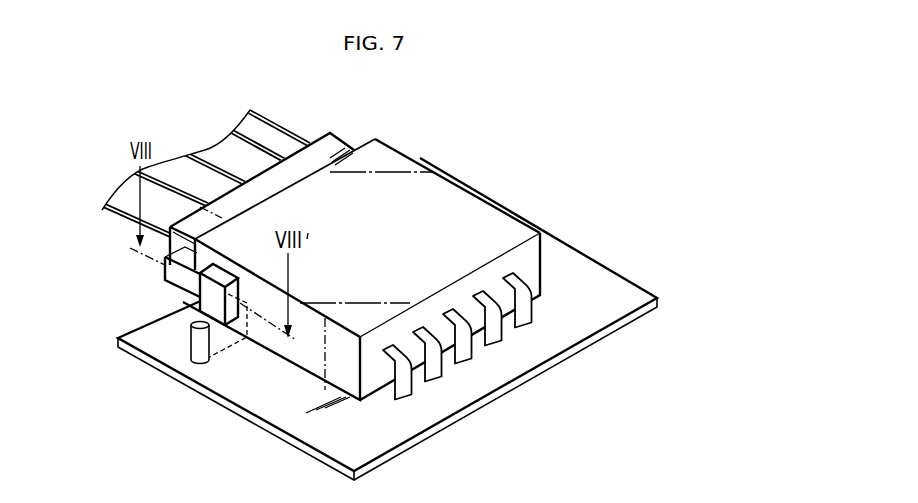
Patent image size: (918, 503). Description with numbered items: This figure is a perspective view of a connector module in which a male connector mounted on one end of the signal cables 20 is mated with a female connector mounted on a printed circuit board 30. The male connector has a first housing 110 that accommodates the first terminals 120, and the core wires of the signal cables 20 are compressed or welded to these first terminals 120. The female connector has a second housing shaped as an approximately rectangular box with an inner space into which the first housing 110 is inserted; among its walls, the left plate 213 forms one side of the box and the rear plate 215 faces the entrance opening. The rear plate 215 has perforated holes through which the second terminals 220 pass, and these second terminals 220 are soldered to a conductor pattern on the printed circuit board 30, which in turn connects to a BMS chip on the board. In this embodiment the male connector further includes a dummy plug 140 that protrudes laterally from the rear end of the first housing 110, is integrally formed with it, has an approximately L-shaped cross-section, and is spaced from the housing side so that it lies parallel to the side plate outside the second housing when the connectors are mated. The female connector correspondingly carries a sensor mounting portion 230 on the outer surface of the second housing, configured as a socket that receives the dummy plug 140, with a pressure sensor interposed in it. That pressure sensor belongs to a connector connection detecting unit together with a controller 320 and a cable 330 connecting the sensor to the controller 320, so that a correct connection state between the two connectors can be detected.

The signal cables 20 is at (269, 138).
The printed circuit board 30 is at (640, 297).
The first housing 110 is at (352, 132).
The first terminals 120 is at (400, 138).
The dummy plug 140 is at (165, 280).
The left plate 213 is at (303, 357).
The rear plate 215 is at (372, 368).
The second terminals 220 is at (442, 366).
The sensor mounting portion 230 is at (200, 311).
The controller 320 is at (195, 347).
The cable 330 is at (200, 366).